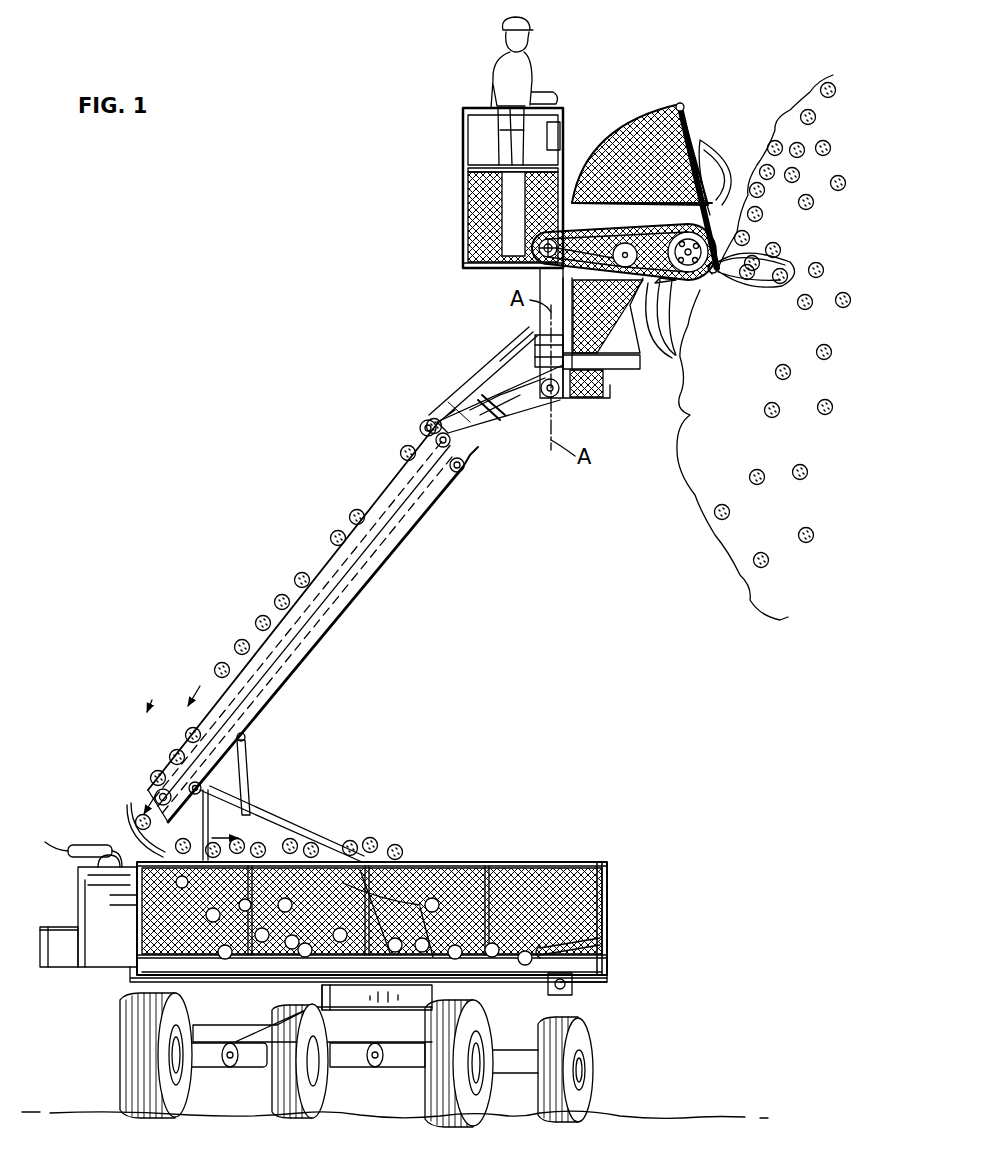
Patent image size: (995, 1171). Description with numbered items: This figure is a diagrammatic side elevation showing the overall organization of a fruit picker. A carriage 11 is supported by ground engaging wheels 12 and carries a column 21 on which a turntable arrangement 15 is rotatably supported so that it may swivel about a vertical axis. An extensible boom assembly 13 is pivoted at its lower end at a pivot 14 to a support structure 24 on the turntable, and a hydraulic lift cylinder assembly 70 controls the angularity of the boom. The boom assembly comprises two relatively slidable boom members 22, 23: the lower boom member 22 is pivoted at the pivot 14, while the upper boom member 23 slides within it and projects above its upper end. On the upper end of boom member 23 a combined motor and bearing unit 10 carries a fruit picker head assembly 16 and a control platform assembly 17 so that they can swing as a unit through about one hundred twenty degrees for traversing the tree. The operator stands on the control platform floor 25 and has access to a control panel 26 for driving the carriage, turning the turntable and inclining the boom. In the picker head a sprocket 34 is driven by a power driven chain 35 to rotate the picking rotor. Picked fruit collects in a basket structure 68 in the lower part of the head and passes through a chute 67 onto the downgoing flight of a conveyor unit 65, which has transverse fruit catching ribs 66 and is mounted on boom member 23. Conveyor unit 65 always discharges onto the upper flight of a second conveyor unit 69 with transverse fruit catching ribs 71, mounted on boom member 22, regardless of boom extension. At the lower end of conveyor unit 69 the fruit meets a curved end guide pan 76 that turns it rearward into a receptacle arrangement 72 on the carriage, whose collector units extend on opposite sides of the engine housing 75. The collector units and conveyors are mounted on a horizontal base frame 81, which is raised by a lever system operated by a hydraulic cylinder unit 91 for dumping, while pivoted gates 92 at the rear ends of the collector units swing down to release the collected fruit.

The combined motor and bearing unit 10 is at (528, 334).
The carriage 11 is at (262, 1060).
The ground engaging wheels 12 is at (125, 1075).
The extensible boom assembly 13 is at (325, 623).
The pivot 14 is at (203, 793).
The turntable arrangement 15 is at (318, 988).
The fruit picker head assembly 16 is at (700, 112).
The control platform assembly 17 is at (460, 170).
The column 21 is at (433, 992).
The boom member 22 is at (478, 448).
The boom member 23 is at (492, 368).
The support structure 24 is at (264, 832).
The control platform floor 25 is at (470, 270).
The control panel 26 is at (556, 140).
The sprocket 34 is at (752, 298).
The power driven chain 35 is at (602, 232).
The conveyor unit 65 is at (381, 492).
The transverse fruit catching ribs 66 is at (322, 568).
The chute 67 is at (480, 388).
The basket structure 68 is at (580, 398).
The second conveyor unit 69 is at (452, 473).
The hydraulic lift cylinder assembly 70 is at (256, 776).
The transverse fruit catching ribs 71 is at (190, 748).
The receptacle arrangement 72 is at (397, 882).
The engine housing 75 is at (108, 893).
The curved end guide pan 76 is at (127, 808).
The horizontal base frame 81 is at (590, 976).
The hydraulic cylinder unit 91 is at (603, 932).
The pivoted gates 92 is at (612, 882).